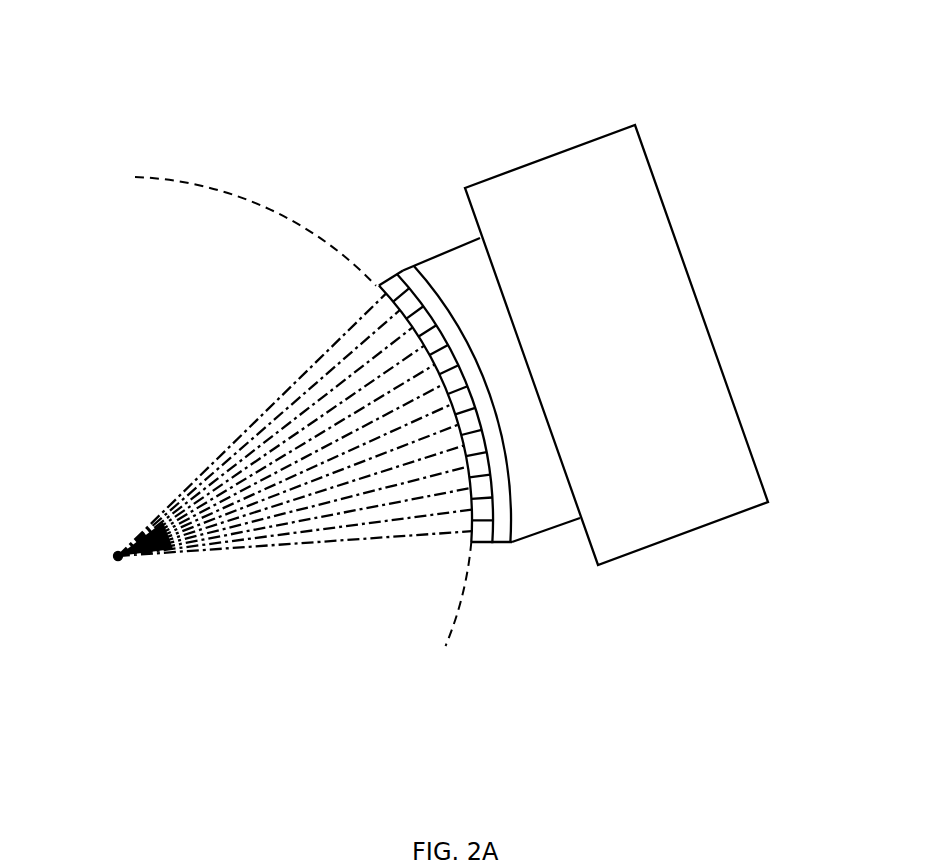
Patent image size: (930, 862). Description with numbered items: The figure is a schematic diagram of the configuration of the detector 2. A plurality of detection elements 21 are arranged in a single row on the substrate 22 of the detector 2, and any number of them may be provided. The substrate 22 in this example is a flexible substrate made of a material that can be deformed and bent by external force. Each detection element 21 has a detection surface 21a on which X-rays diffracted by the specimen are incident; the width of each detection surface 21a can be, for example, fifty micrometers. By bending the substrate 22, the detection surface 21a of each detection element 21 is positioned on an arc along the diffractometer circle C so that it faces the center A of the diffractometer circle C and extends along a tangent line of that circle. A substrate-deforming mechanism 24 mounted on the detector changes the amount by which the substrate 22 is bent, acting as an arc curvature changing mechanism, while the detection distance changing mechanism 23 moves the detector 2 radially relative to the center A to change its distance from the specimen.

The detector 2 is at (511, 368).
The detection element 21 is at (348, 303).
The detection surface 21a is at (380, 292).
The substrate 22 is at (403, 270).
The detection distance changing mechanism 23 is at (690, 278).
The substrate-deforming mechanism 24 is at (543, 528).
The center of the diffractometer circle A is at (118, 558).
The diffractometer circle C is at (151, 178).